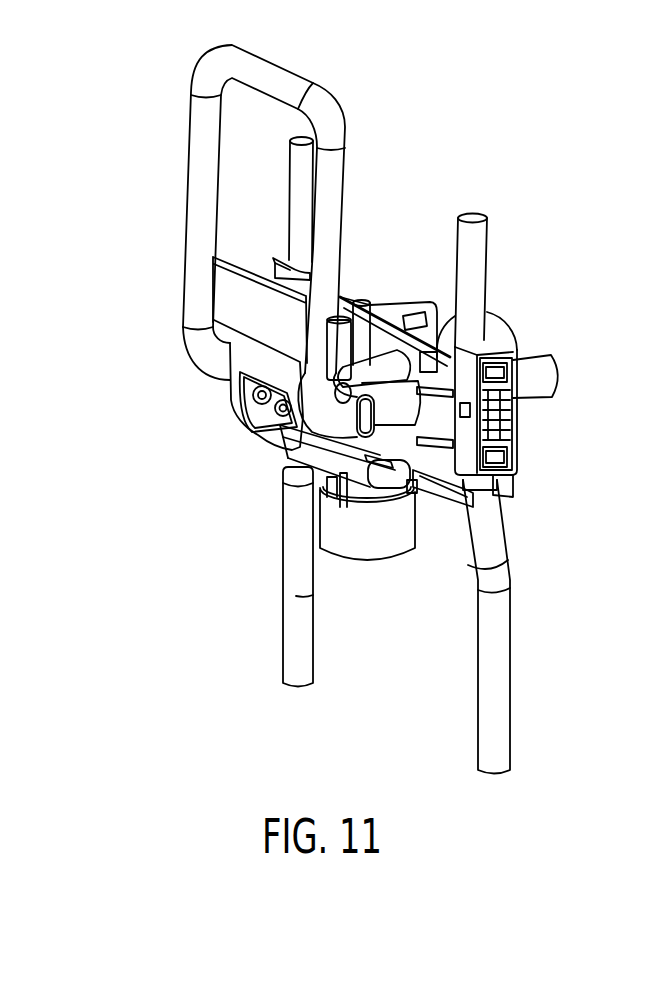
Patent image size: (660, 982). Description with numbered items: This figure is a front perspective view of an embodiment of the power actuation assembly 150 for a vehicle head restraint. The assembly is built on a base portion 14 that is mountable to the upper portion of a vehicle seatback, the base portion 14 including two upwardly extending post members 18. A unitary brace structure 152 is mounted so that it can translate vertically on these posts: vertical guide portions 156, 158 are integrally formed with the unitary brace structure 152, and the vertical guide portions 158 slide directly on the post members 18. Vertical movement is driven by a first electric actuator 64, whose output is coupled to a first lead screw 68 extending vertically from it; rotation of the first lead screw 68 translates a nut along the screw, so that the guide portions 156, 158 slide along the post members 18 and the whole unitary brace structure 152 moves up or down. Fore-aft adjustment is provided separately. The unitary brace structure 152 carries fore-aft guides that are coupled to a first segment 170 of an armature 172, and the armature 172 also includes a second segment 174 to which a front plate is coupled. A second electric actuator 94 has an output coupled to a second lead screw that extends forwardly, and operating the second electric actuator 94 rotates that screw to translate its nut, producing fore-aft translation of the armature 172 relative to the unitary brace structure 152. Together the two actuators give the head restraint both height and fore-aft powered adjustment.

The base portion 14 is at (277, 583).
The post members 18 is at (288, 636).
The first electric actuator 64 is at (362, 555).
The first lead screw 68 is at (365, 307).
The second electric actuator 94 is at (503, 328).
The power actuation assembly 150 is at (430, 202).
The unitary brace structure 152 is at (400, 443).
The vertical guide portion 156 is at (271, 261).
The vertical guide portion 158 is at (510, 410).
The first segment 170 is at (327, 413).
The armature 172 is at (173, 238).
The second segment 174 is at (197, 123).